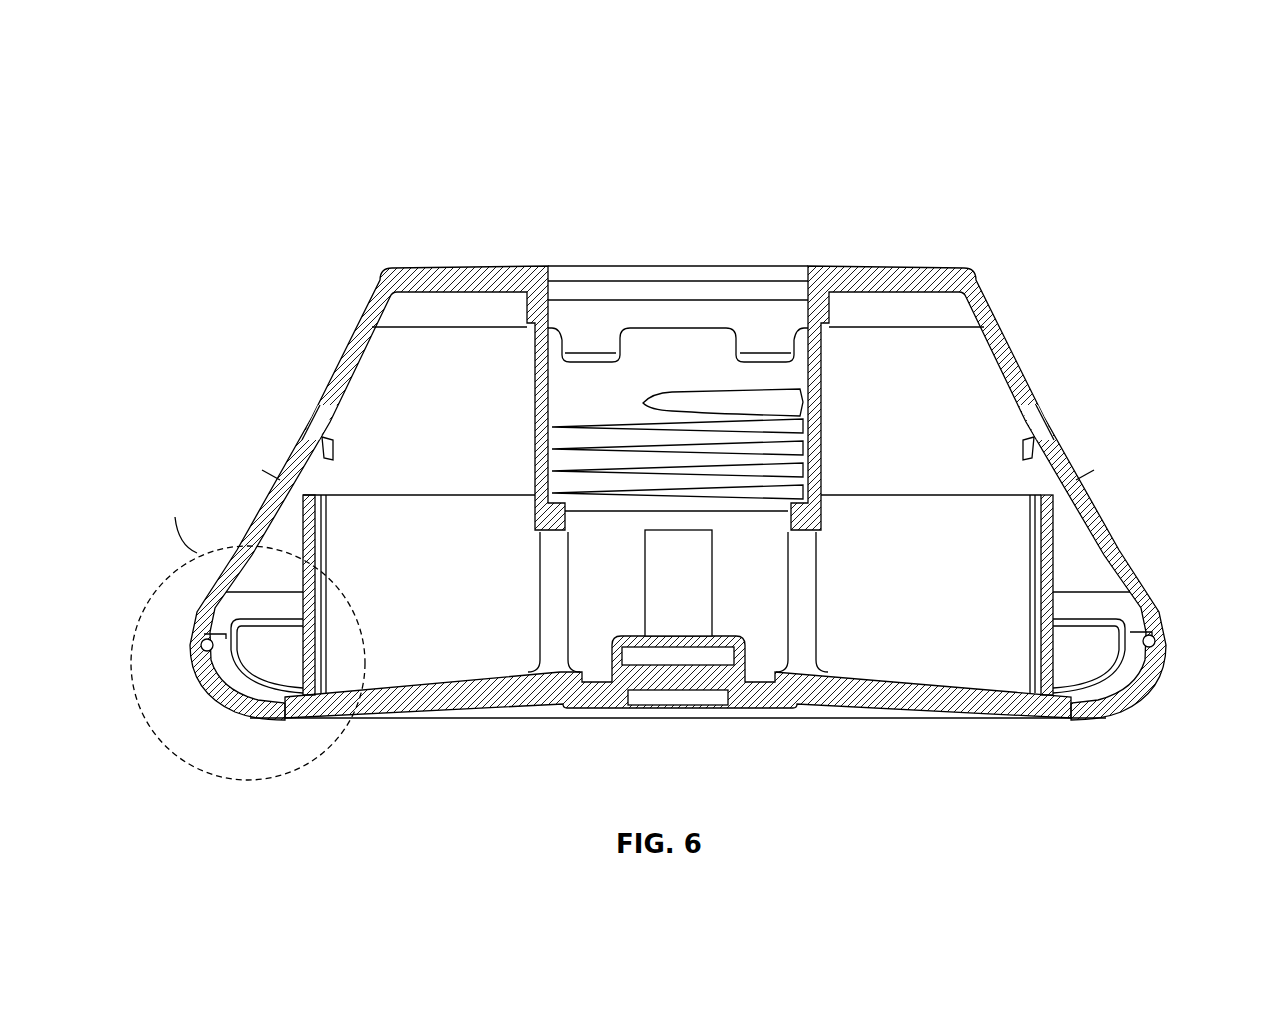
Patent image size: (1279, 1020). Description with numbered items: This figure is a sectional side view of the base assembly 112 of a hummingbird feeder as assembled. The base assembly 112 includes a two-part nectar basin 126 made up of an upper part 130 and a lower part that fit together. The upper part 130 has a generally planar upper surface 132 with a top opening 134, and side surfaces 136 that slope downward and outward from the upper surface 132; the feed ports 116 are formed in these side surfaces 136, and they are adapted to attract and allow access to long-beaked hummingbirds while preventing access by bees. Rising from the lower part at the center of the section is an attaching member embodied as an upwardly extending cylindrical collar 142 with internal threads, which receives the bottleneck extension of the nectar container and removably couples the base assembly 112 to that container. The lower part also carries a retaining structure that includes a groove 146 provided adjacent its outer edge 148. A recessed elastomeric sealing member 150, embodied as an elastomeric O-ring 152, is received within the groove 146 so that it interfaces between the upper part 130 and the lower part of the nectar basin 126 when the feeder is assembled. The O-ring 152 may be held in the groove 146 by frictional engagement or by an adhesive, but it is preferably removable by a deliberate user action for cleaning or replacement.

The base assembly 112 is at (980, 92).
The feed ports 116 is at (312, 415).
The nectar basin 126 is at (1130, 240).
The upper part 130 is at (322, 328).
The upper surface 132 is at (478, 268).
The top opening 134 is at (612, 290).
The side surfaces 136 is at (272, 497).
The collar 142 is at (823, 452).
The groove 146 is at (1150, 665).
The outer edge 148 is at (1152, 634).
The recessed elastomeric sealing member 150 is at (205, 668).
The O-ring 152 is at (1152, 647).